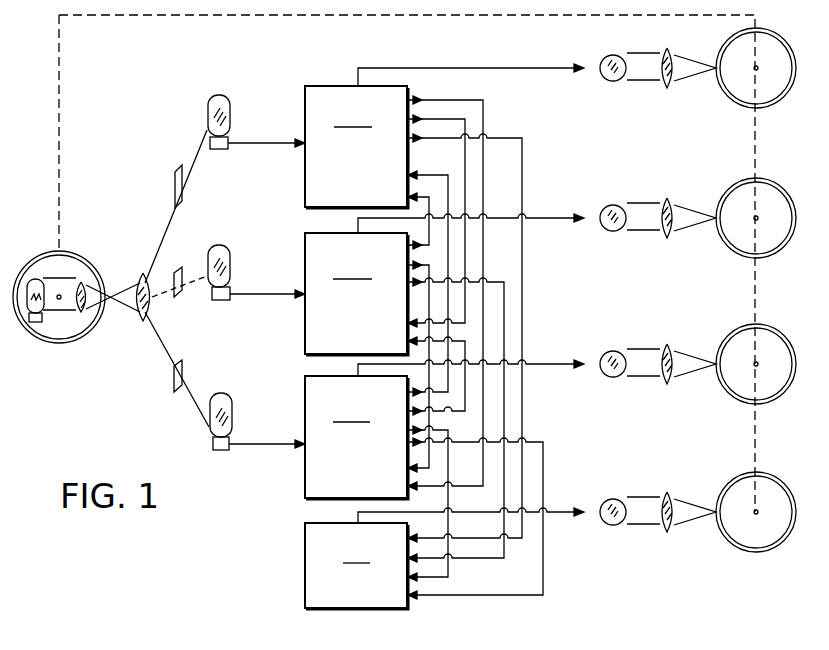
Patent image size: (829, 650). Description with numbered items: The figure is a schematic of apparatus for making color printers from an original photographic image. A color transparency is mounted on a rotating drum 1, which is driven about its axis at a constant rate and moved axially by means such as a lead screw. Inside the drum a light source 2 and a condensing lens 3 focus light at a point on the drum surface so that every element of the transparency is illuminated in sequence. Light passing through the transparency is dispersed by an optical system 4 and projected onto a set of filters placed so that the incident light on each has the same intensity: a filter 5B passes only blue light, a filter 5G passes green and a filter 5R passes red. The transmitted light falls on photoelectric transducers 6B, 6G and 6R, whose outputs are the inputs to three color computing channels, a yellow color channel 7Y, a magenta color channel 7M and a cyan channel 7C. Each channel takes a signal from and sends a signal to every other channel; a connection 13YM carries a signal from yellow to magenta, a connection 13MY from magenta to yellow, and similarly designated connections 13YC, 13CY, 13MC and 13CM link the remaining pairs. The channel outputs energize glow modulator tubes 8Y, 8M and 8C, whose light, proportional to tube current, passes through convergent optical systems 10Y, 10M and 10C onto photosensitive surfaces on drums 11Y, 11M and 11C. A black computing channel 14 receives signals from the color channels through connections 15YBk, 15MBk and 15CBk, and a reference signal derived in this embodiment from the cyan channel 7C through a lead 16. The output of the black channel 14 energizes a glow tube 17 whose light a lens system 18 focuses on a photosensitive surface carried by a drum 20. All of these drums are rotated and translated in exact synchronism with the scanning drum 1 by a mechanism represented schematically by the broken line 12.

The rotating drum 1 is at (93, 267).
The light source 2 is at (38, 279).
The lens 3 is at (81, 281).
The optical system 4 is at (139, 280).
The filter 5B is at (175, 179).
The filter 5G is at (178, 275).
The filter 5R is at (175, 378).
The photoelectric transducer 6B is at (213, 106).
The photoelectric transducer 6G is at (217, 250).
The photoelectric transducer 6R is at (214, 396).
The yellow color channel 7Y is at (356, 147).
The magenta color channel 7M is at (356, 294).
The cyan channel 7C is at (356, 437).
The glow modulator tube 8Y is at (598, 59).
The glow modulator tube 8M is at (605, 209).
The glow modulator tube 8C is at (608, 352).
The convergent optical system 10Y is at (665, 83).
The convergent optical system 10M is at (664, 234).
The convergent optical system 10C is at (668, 384).
The drum 11Y is at (730, 99).
The drum 11M is at (731, 260).
The drum 11C is at (735, 404).
The broken line 12 is at (354, 15).
The connection 13YC is at (483, 100).
The connection 13YM is at (466, 119).
The connection 13CY is at (455, 160).
The connection 13MY is at (429, 204).
The connection 13MC is at (429, 350).
The connection 13CM is at (465, 411).
The black computing channel 14 is at (356, 566).
The connection 15YBk is at (522, 160).
The connection 15MBk is at (504, 312).
The connection 15CBk is at (448, 501).
The lead 16 is at (543, 460).
The glow tube 17 is at (611, 500).
The lens system 18 is at (676, 470).
The drum 20 is at (726, 542).